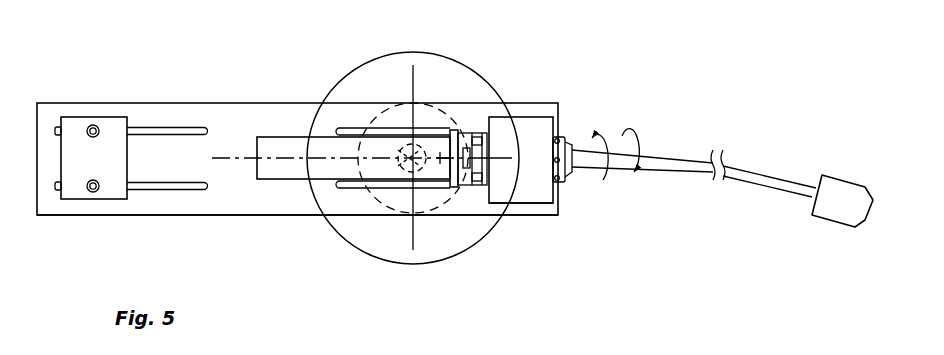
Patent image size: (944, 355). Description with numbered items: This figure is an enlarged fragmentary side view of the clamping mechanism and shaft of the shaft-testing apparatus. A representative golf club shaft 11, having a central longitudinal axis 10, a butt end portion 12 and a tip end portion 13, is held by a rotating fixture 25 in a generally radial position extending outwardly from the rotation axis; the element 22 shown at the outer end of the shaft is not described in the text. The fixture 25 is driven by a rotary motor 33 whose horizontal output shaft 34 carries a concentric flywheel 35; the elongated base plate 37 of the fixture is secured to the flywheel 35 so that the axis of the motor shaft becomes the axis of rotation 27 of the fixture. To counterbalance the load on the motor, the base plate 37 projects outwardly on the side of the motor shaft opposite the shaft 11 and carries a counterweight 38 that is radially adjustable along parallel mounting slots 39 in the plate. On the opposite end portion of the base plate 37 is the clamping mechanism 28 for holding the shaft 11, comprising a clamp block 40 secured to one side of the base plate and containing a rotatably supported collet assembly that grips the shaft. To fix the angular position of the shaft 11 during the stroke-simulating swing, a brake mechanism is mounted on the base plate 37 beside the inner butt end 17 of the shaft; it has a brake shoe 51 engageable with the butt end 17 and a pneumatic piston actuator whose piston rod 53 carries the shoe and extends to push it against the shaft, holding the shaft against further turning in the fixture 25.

The central longitudinal axis 10 is at (300, 155).
The golf club shaft 11 is at (674, 156).
The butt end portion 12 is at (579, 165).
The tip end portion 13 is at (760, 174).
The butt end 17 is at (470, 155).
The tool head 22 is at (842, 208).
The fixture 25 is at (253, 217).
The axis of rotation 27 is at (406, 162).
The clamping mechanism 28 is at (520, 205).
The rotary motor 33 is at (455, 57).
The output shaft 34 is at (408, 160).
The flywheel 35 is at (420, 168).
The base plate 37 is at (145, 217).
The counterweight 38 is at (111, 129).
The mounting slots 39 is at (173, 186).
The clamp block 40 is at (530, 130).
The brake shoe 51 is at (462, 173).
The piston rod 53 is at (436, 160).